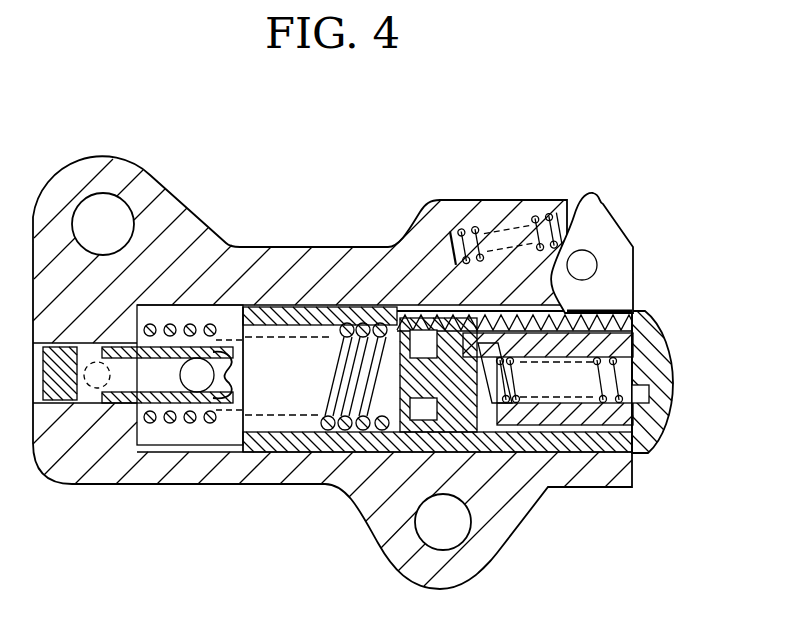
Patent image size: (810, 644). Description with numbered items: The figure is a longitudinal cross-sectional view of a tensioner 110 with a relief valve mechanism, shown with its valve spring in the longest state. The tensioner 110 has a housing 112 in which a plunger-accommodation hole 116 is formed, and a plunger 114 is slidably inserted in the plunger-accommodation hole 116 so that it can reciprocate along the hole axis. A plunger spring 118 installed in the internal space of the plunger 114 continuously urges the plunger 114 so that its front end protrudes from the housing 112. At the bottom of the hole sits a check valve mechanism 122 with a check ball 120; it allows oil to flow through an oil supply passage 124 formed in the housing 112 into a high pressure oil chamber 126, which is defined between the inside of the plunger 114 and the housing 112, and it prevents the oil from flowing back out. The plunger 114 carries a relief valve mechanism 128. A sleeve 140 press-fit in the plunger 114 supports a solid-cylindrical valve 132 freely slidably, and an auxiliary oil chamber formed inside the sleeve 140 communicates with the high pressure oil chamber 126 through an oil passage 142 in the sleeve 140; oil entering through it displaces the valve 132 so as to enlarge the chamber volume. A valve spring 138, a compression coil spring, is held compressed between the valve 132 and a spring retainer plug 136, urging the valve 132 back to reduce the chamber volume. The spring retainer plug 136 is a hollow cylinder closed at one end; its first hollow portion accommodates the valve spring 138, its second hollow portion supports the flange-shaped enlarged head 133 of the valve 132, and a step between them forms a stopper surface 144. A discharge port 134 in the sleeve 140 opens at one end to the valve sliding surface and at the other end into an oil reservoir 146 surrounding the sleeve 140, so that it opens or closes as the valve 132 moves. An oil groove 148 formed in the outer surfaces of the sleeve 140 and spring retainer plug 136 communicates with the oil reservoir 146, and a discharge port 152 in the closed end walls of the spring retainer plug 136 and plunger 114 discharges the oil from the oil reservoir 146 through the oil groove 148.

The tensioner 110 is at (358, 158).
The housing 112 is at (168, 188).
The plunger 114 is at (284, 300).
The plunger-accommodation hole 116 is at (222, 308).
The plunger spring 118 is at (343, 305).
The check ball 120 is at (188, 392).
The check valve mechanism 122 is at (244, 383).
The oil supply passage 124 is at (92, 386).
The high pressure oil chamber 126 is at (310, 373).
The relief valve mechanism 128 is at (490, 345).
The valve 132 is at (393, 405).
The enlarged head 133 is at (468, 440).
The discharge port 134 is at (432, 335).
The spring retainer plug 136 is at (636, 345).
The valve spring 138 is at (636, 416).
The sleeve 140 is at (455, 433).
The oil passage 142 is at (392, 374).
The stopper surface 144 is at (483, 442).
The oil reservoir 146 is at (397, 308).
The oil groove 148 is at (632, 454).
The discharge port 152 is at (660, 389).